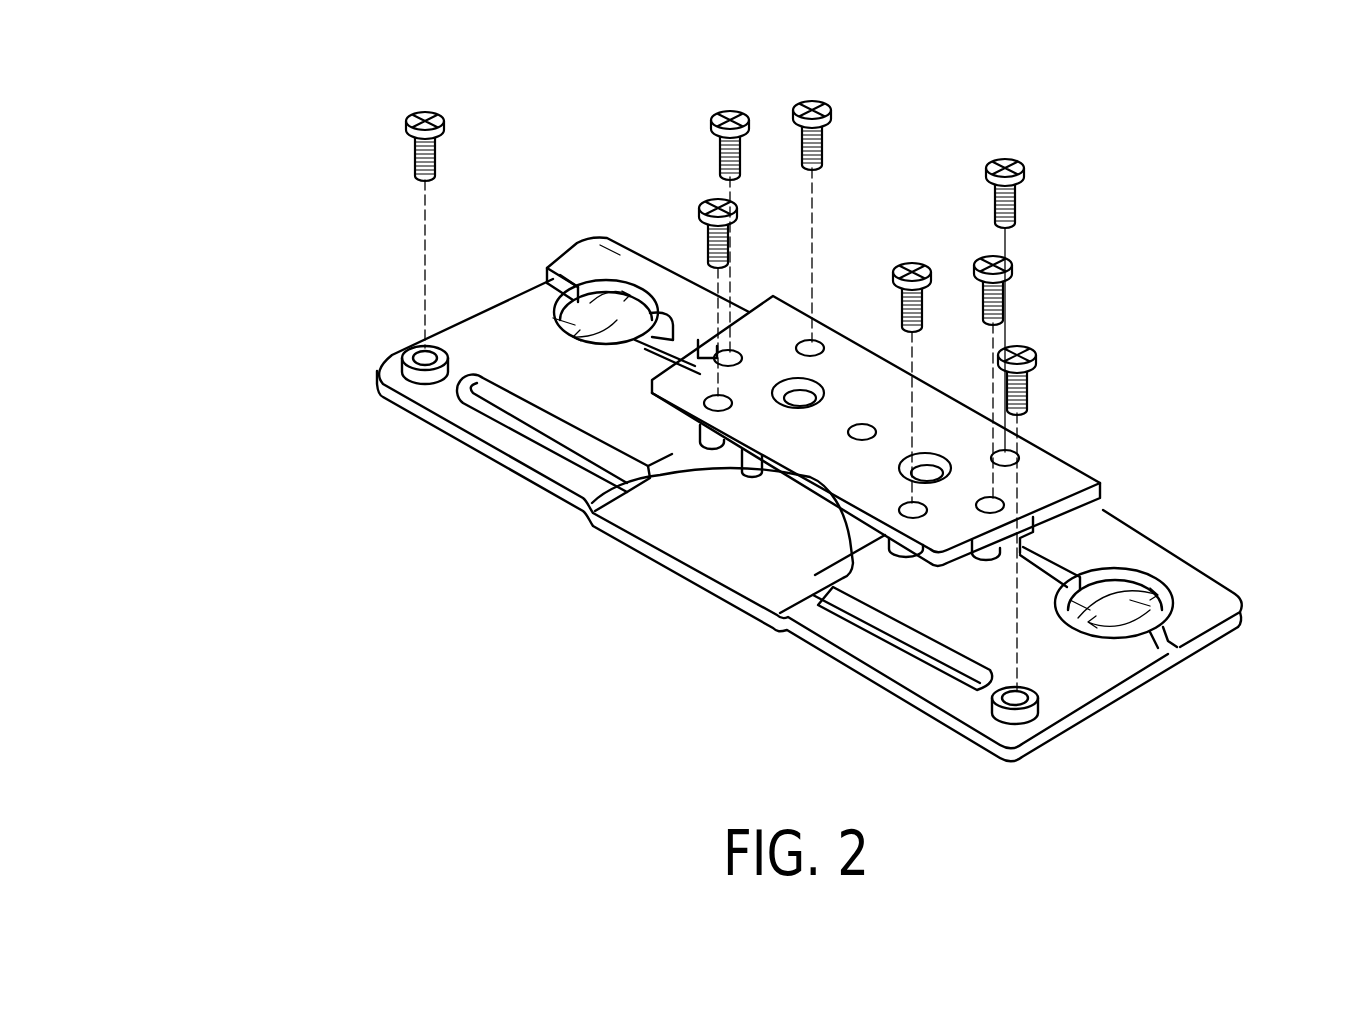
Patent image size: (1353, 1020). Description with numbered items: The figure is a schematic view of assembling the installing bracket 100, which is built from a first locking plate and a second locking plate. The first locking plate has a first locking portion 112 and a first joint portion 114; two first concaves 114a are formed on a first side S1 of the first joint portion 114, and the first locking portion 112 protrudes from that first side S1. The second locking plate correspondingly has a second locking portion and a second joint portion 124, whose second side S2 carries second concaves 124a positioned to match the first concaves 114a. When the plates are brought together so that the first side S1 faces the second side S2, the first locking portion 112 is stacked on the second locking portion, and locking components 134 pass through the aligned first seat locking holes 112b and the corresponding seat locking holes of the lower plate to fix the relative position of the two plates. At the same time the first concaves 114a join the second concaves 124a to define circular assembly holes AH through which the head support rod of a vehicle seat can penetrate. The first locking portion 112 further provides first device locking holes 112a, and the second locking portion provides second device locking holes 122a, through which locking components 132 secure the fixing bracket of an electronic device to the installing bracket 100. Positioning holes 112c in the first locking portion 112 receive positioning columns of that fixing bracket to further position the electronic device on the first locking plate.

The installing bracket 100 is at (250, 86).
The first locking portion 112 is at (860, 375).
The first device locking hole 112a is at (722, 398).
The first seat locking hole 112b is at (730, 355).
The positioning hole 112c is at (760, 480).
The first joint portion 114 is at (612, 252).
The first concave 114a is at (610, 247).
The second device locking hole 122a is at (422, 352).
The second joint portion 124 is at (417, 413).
The second concave 124a is at (553, 318).
The locking component 132 is at (443, 117).
The locking component 134 is at (828, 102).
The assembly hole AH is at (592, 306).
The first side S1 is at (540, 292).
The second side S2 is at (651, 315).